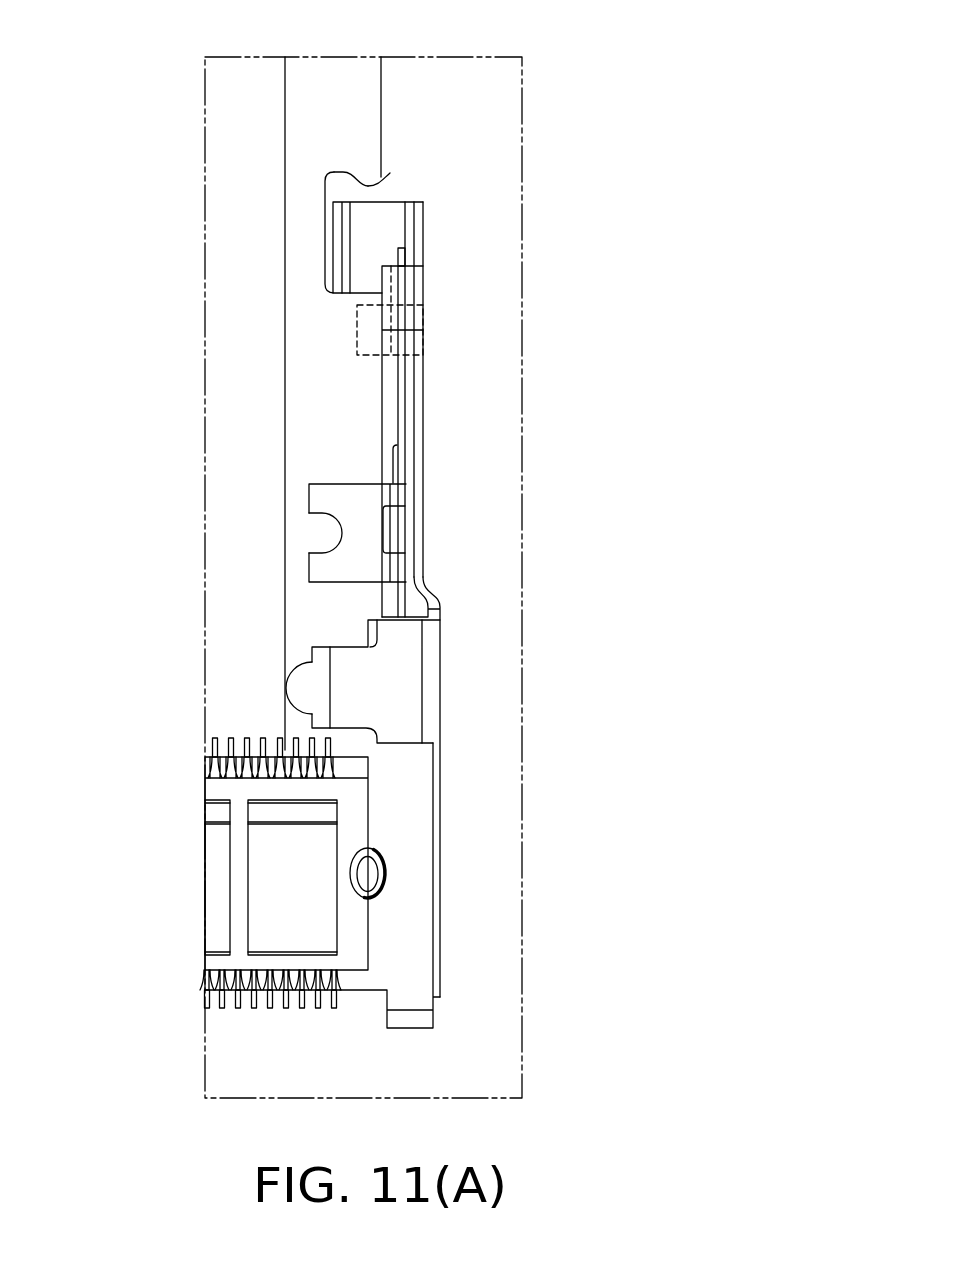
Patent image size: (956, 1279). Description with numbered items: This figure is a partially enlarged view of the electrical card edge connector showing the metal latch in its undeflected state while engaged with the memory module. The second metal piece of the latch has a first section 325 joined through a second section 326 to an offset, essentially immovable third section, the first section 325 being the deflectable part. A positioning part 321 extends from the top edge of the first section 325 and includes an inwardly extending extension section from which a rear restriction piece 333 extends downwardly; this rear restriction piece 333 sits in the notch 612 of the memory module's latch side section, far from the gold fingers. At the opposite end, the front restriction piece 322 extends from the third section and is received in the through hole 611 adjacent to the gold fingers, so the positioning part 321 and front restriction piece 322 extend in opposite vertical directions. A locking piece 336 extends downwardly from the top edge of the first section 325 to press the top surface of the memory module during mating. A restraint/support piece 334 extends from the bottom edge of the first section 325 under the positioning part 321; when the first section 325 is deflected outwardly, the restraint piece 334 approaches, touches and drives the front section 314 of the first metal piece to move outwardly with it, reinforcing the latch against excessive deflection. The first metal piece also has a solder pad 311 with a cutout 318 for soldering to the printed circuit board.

The notch 612 is at (390, 173).
The restraint/support piece 334 is at (384, 277).
The positioning part 321 is at (357, 212).
The front section 314 is at (401, 261).
The rear restriction piece 333 is at (337, 255).
The locking piece 336 is at (372, 333).
The first section 325 is at (422, 378).
The solder pad 311 is at (323, 495).
The cutout 318 is at (330, 532).
The second section 326 is at (428, 592).
The front restriction piece 322 is at (320, 683).
The through hole 611 is at (300, 688).